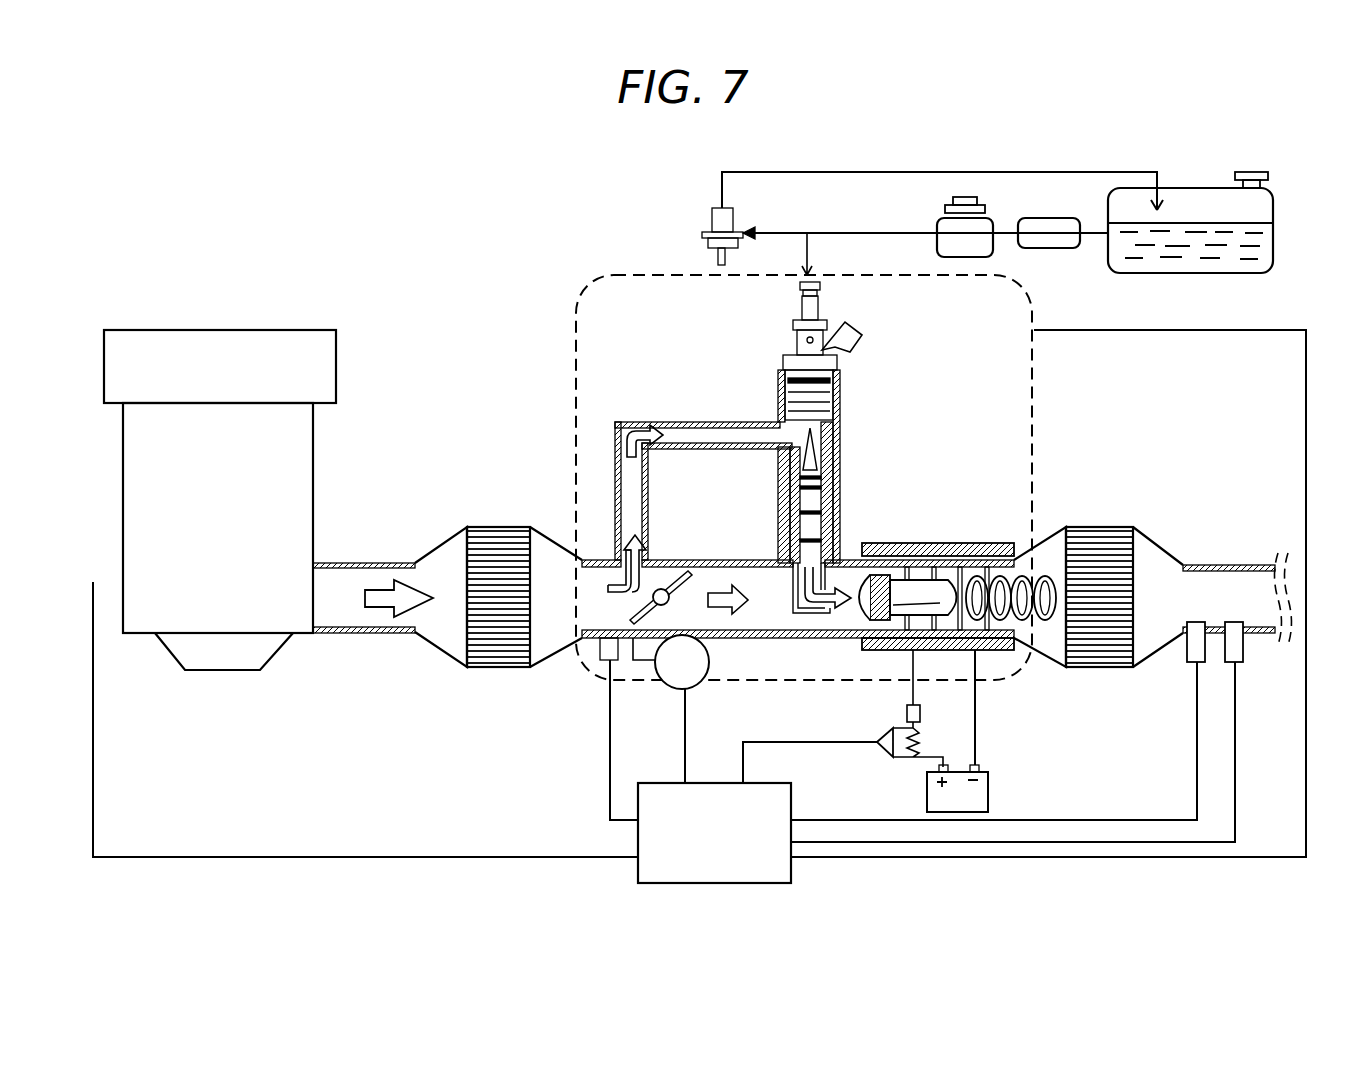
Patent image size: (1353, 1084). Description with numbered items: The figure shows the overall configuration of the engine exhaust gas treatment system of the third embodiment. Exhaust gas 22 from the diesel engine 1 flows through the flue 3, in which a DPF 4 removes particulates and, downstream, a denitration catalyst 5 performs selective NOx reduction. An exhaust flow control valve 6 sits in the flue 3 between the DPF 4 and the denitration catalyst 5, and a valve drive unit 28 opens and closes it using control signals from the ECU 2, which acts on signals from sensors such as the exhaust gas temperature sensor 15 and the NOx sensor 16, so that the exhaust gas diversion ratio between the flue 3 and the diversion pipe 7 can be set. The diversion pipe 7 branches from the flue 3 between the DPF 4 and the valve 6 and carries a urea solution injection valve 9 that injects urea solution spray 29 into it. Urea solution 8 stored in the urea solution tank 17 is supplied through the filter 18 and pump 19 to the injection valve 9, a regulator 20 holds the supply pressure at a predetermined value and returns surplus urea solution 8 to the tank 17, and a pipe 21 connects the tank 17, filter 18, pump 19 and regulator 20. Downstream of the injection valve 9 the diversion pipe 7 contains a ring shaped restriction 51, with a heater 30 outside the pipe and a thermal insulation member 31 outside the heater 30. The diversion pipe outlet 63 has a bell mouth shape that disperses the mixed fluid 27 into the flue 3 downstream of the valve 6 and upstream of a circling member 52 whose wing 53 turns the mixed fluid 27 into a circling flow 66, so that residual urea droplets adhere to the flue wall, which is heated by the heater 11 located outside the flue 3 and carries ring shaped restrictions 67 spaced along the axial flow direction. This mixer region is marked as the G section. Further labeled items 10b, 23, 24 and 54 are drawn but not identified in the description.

The diesel engine 1 is at (225, 355).
The ECU 2 is at (673, 862).
The flue 3 is at (333, 618).
The DPF 4 is at (495, 640).
The denitration catalyst 5 is at (1096, 640).
The exhaust flow control valve 6 is at (680, 573).
The diversion pipe 7 is at (698, 440).
The urea solution 8 is at (1255, 247).
The urea solution injection valve 9 is at (860, 328).
The heater electrodes 10b is at (990, 545).
The heater 11 is at (950, 545).
The exhaust gas temperature sensor 15 is at (598, 660).
The NOx sensor 16 is at (1192, 650).
The urea solution tank 17 is at (1238, 650).
The filter 18 is at (1054, 220).
The pump 19 is at (983, 222).
The regulator 20 is at (720, 208).
The pipe 21 is at (820, 170).
The exhaust gas 22 is at (392, 608).
The bypass duct 23 is at (640, 424).
The gas flow arrow 24 is at (725, 608).
The mixed fluid 27 is at (792, 618).
The valve drive unit 28 is at (665, 690).
The urea solution spray 29 is at (838, 440).
The heater 30 is at (830, 495).
The thermal insulation member 31 is at (835, 470).
The ring shaped restriction 51 is at (822, 533).
The circling member 52 is at (897, 650).
The wing 53 is at (907, 603).
The bypass inlet flow 54 is at (616, 556).
The diversion pipe outlet 63 is at (830, 628).
The circling flow 66 is at (1035, 560).
The ring shaped restrictions 67 is at (915, 545).
The G section G is at (589, 281).